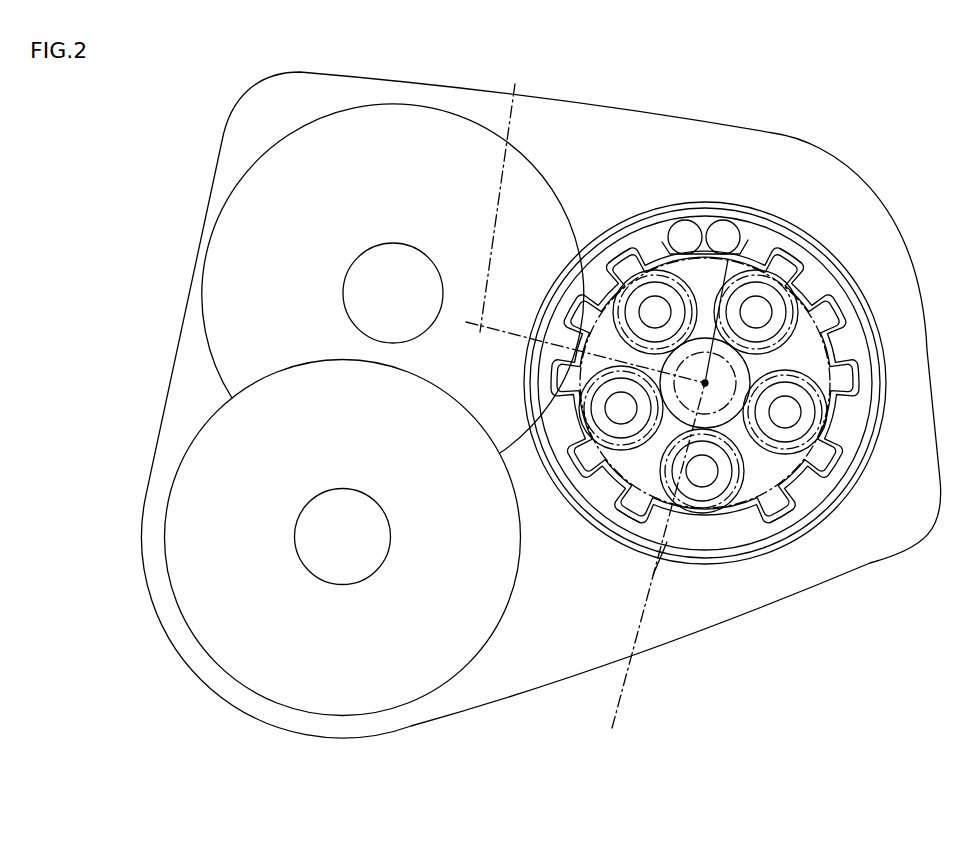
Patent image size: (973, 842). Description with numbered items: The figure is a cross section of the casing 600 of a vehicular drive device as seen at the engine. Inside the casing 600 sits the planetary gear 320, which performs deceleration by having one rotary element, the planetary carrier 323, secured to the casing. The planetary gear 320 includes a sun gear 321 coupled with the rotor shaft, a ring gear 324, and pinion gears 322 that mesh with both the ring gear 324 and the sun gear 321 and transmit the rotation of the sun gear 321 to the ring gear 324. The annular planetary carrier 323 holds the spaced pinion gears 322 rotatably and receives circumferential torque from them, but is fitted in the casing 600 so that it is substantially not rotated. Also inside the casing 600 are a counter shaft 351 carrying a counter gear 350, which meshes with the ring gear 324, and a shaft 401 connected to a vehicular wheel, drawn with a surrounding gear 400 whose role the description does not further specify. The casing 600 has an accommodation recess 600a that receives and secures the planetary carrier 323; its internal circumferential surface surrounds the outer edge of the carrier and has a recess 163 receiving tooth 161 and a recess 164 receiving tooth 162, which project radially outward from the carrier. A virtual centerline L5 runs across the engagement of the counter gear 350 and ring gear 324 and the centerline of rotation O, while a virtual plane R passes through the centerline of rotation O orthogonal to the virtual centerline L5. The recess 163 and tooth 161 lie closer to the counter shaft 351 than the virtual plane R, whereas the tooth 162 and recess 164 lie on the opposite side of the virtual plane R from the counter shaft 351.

The counter gear 350 is at (468, 118).
The counter shaft 351 is at (343, 293).
The second gear 400 is at (478, 653).
The shaft 401 is at (294, 537).
The virtual centerline L5 is at (585, 223).
The planetary gear 320 is at (725, 192).
The sun gear 321 is at (651, 565).
The pinion gear 322 is at (693, 514).
The planetary carrier 323 is at (742, 500).
The ring gear 324 is at (660, 222).
The casing 600 is at (704, 406).
The accommodation recess 600a is at (687, 513).
The tooth 161 is at (628, 504).
The tooth 162 is at (782, 506).
The recess 163 is at (620, 262).
The recess 164 is at (788, 262).
The centerline of rotation O is at (705, 383).
The virtual plane R is at (737, 230).